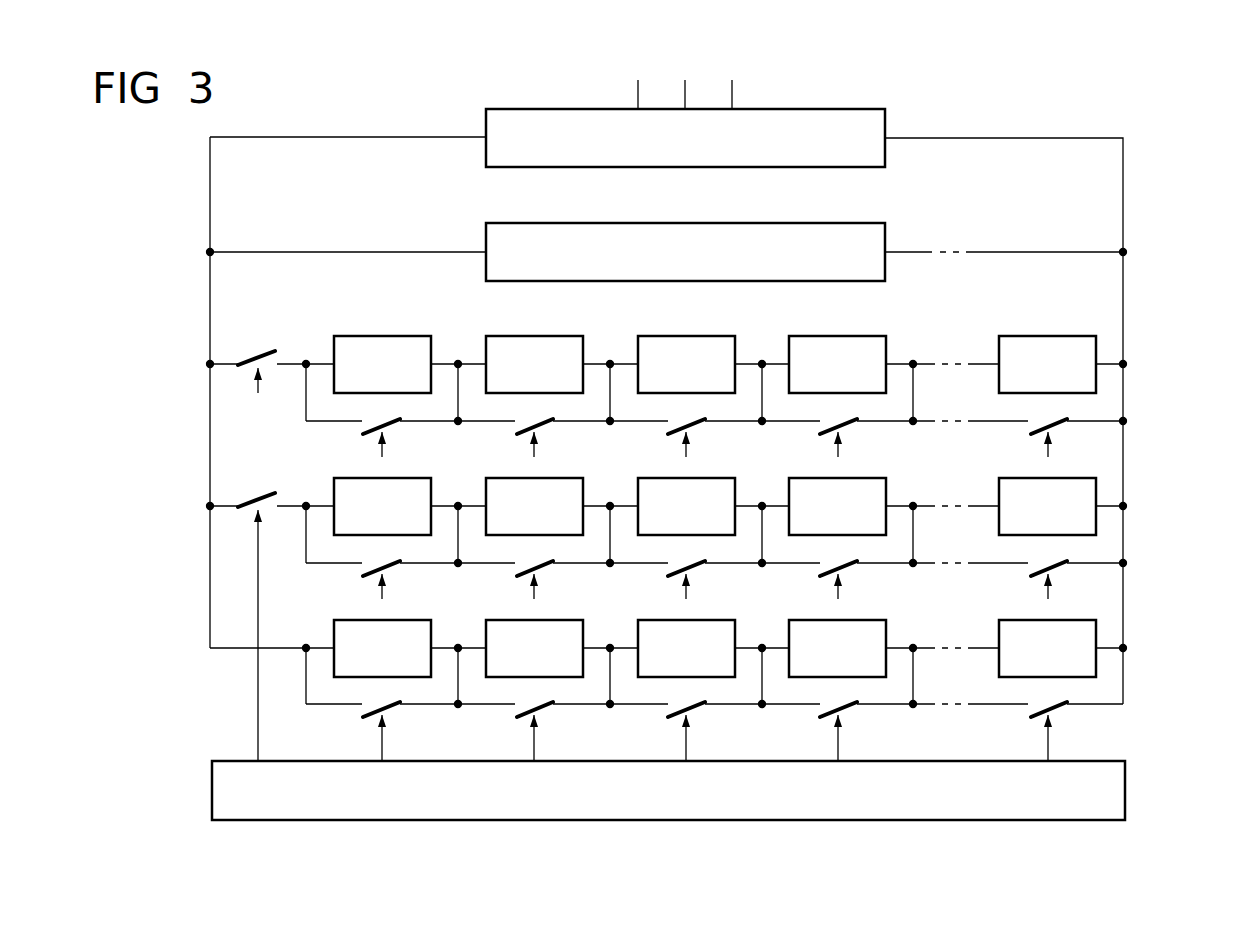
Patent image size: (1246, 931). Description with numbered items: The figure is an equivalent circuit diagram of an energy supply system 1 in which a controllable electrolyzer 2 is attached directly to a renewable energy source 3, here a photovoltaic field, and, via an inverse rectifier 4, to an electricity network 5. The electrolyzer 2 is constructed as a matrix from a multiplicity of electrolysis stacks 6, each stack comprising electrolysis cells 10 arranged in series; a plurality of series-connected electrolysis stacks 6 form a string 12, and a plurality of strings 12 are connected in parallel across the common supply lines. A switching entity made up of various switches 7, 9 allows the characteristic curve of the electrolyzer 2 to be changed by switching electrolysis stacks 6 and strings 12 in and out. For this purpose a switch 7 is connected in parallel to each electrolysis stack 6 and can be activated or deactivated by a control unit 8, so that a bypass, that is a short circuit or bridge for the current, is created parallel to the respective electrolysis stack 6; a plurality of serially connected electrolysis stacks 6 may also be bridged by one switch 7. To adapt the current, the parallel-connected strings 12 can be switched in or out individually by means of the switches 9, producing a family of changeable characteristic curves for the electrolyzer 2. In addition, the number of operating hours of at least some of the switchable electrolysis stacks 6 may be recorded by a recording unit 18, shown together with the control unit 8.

The energy supply system 1 is at (1163, 112).
The controllable electrolyzer 2 is at (1160, 438).
The renewable energy source 3 is at (887, 240).
The inverse rectifier 4 is at (887, 125).
The electricity network 5 is at (735, 73).
The electrolysis stack 6 is at (715, 506).
The switch 7 is at (1063, 423).
The control unit 8 is at (725, 790).
The switch 9 is at (265, 353).
The electrolysis cell 10 is at (350, 379).
The string 12 is at (1133, 359).
The recording unit 18 is at (1127, 785).